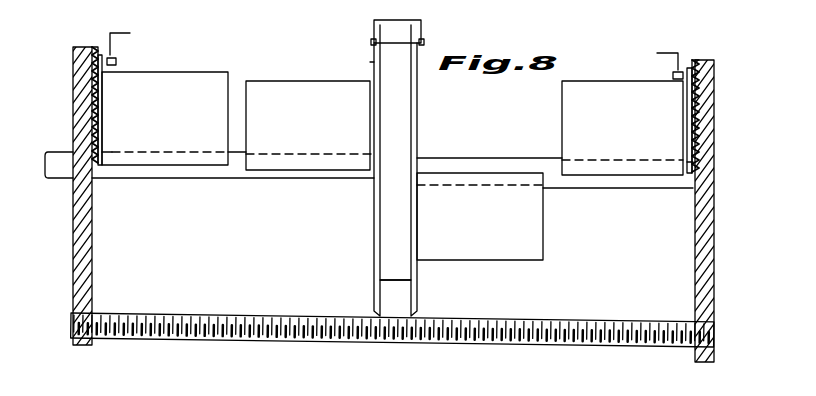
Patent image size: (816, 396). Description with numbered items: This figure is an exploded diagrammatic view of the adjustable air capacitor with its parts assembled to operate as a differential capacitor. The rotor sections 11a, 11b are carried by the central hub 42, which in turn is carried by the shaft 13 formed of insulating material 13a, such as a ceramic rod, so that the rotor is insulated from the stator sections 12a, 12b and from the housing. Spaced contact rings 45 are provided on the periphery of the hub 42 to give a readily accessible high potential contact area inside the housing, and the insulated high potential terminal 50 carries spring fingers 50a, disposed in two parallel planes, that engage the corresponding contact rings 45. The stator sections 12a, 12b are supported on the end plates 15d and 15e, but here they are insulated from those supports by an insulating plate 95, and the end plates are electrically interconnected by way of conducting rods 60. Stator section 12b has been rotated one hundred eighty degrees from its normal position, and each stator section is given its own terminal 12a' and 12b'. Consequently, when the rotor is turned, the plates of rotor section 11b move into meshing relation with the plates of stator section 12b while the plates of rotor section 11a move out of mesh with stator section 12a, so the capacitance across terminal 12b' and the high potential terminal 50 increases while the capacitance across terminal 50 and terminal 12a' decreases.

The rotor section 11a is at (292, 90).
The rotor section 11b is at (487, 252).
The stator section 12a is at (173, 102).
The terminal 12a' is at (147, 49).
The stator section 12b is at (622, 111).
The terminal 12b' is at (654, 67).
The shaft 13 is at (62, 172).
The insulating material 13a is at (434, 165).
The end plate 15d is at (78, 137).
The end plate 15e is at (705, 140).
The central hub 42 is at (383, 250).
The contact rings 45 is at (417, 110).
The high potential terminal 50 is at (397, 14).
The spring fingers 50a is at (374, 38).
The conducting rods 60 is at (330, 342).
The insulating plate 95 is at (94, 47).